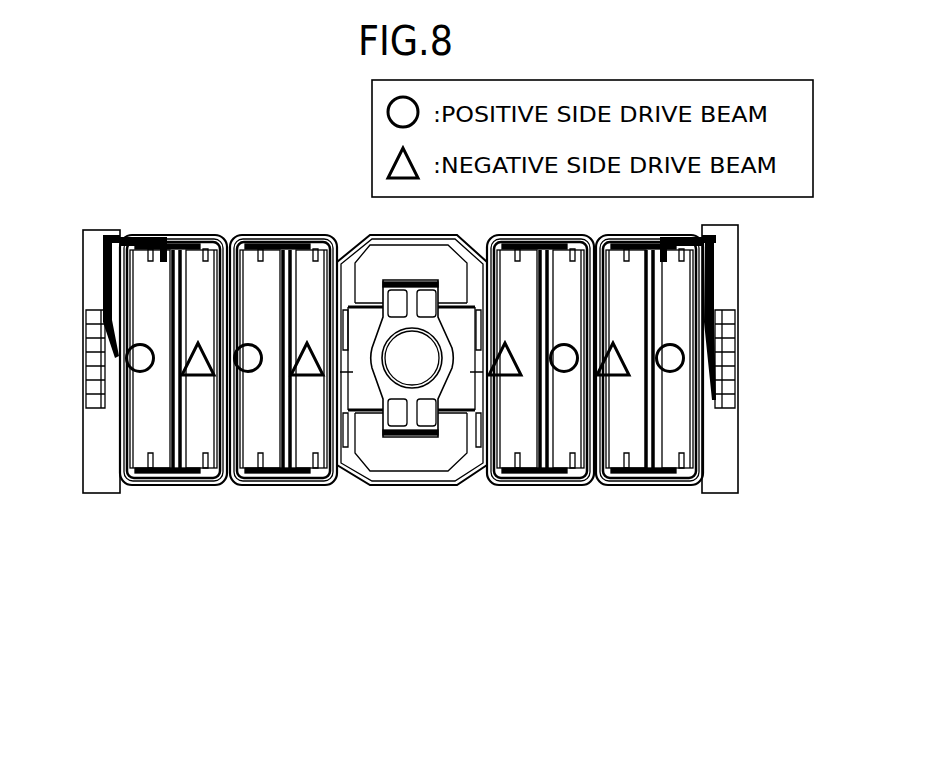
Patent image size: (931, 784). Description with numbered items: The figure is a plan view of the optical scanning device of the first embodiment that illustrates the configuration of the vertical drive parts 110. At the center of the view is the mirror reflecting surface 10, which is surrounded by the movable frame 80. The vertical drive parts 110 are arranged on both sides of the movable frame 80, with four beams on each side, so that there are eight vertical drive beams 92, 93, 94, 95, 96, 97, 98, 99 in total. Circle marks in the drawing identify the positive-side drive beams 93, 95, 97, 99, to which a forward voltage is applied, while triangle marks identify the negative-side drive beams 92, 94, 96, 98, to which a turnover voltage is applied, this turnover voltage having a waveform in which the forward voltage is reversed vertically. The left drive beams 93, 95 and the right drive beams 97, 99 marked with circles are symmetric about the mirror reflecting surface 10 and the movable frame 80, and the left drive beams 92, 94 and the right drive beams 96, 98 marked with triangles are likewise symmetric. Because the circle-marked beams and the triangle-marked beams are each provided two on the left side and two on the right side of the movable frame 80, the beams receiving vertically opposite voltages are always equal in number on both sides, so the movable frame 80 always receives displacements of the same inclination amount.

The mirror reflecting surface 10 is at (413, 362).
The movable frame 80 is at (409, 486).
The vertical drive beam 92 is at (312, 450).
The vertical drive beam 93 is at (256, 450).
The vertical drive beam 94 is at (205, 450).
The vertical drive beam 95 is at (150, 450).
The vertical drive beam 96 is at (518, 450).
The vertical drive beam 97 is at (573, 450).
The vertical drive beam 98 is at (622, 450).
The vertical drive beam 99 is at (678, 450).
The vertical drive part 110 is at (340, 537).